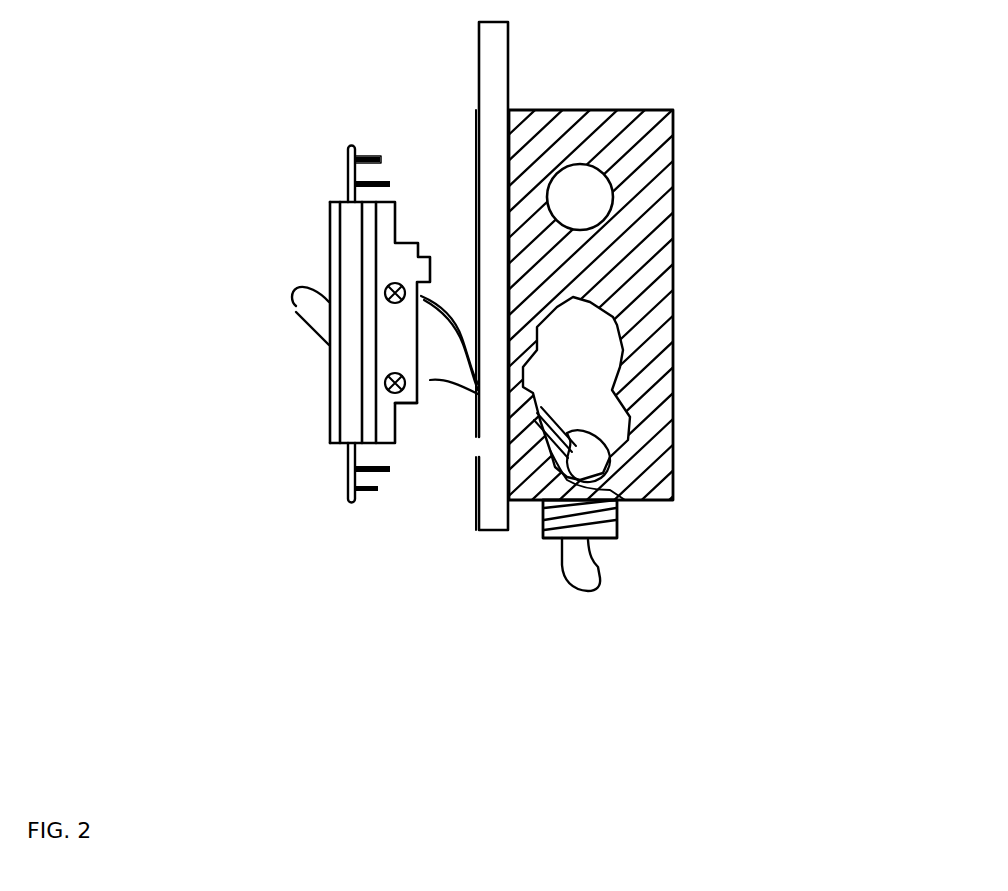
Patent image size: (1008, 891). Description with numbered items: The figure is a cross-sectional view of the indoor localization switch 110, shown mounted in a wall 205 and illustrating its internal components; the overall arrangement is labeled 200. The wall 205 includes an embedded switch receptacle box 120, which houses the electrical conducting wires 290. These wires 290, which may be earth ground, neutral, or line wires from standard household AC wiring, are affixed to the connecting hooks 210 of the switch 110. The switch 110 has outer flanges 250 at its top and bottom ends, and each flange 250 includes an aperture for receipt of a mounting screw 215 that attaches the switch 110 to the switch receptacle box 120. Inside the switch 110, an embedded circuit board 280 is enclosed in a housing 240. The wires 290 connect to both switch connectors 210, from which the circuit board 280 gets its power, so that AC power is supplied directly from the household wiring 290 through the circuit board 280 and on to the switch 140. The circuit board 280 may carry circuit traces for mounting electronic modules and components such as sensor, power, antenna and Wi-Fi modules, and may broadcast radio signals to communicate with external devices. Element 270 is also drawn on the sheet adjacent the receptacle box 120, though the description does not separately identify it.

The mounting assembly 200 is at (868, 751).
The indoor localization switch 110 is at (302, 400).
The switch receptacle box 120 is at (652, 271).
The switch 140 is at (308, 305).
The wall 205 is at (478, 516).
The connecting hooks 210 is at (395, 283).
The mounting screws 215 is at (378, 157).
The housing 240 is at (430, 387).
The outer flanges 250 is at (375, 445).
The nut 270 is at (613, 510).
The embedded circuit board 280 is at (348, 195).
The electrical conducting wires 290 is at (463, 333).